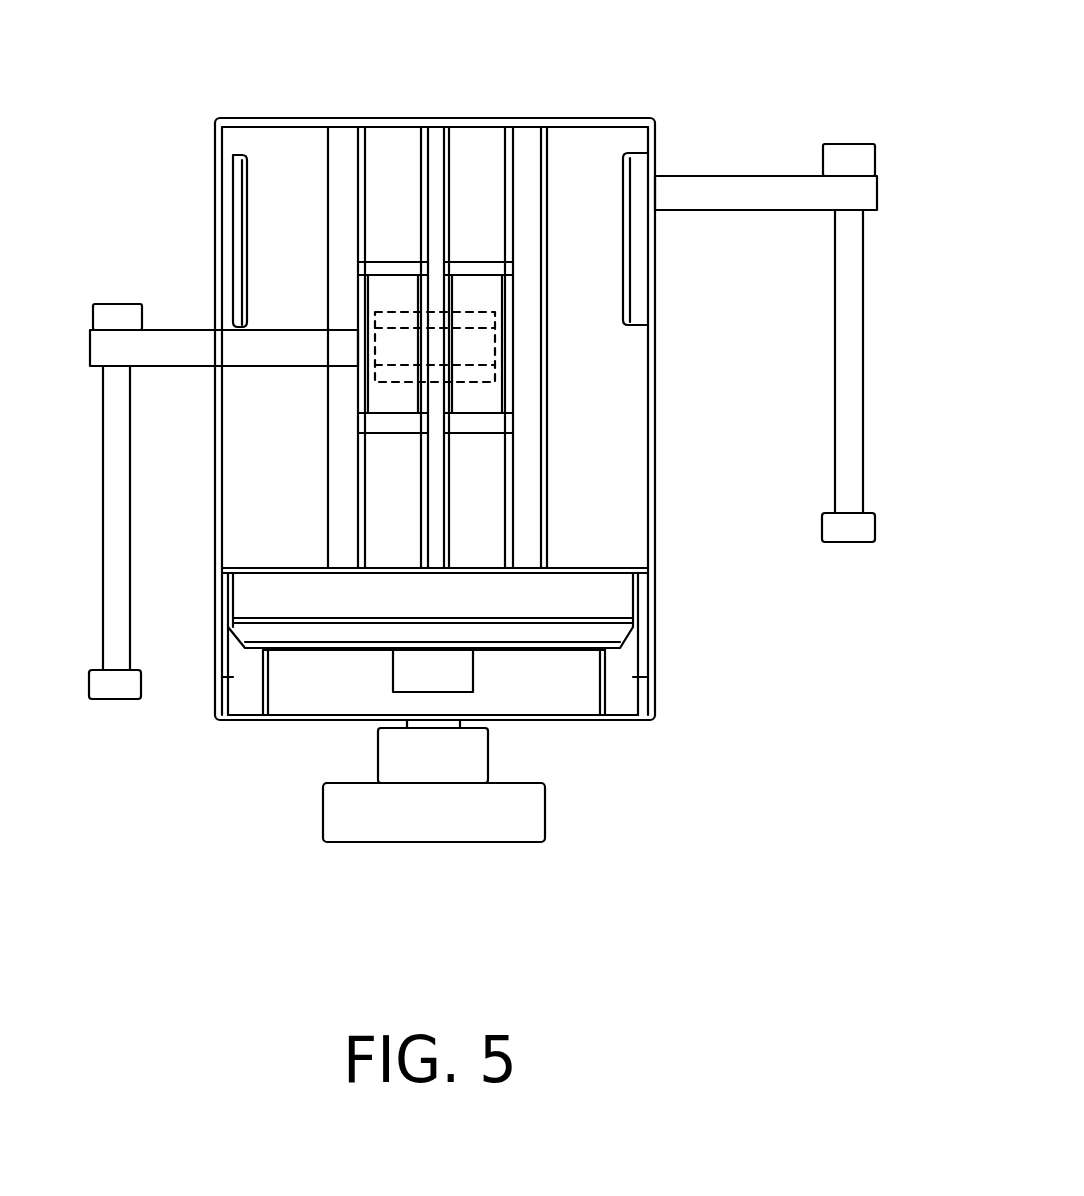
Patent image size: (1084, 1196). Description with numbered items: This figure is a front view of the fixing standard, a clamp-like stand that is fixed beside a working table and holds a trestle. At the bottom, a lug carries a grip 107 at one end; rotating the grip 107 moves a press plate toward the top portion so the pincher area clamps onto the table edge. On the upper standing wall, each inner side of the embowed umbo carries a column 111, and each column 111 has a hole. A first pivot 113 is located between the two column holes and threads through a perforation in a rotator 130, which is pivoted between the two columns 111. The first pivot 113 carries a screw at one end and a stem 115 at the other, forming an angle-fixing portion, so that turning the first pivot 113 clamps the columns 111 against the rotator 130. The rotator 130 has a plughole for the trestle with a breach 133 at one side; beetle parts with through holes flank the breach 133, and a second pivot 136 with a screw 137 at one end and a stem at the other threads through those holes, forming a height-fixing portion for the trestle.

The grip 107 is at (502, 819).
The column 111 is at (233, 155).
The first pivot 113 is at (707, 186).
The stem 115 is at (850, 155).
The rotator 130 is at (607, 432).
The breach 133 is at (434, 137).
The second pivot 136 is at (183, 337).
The screw 137 is at (113, 313).